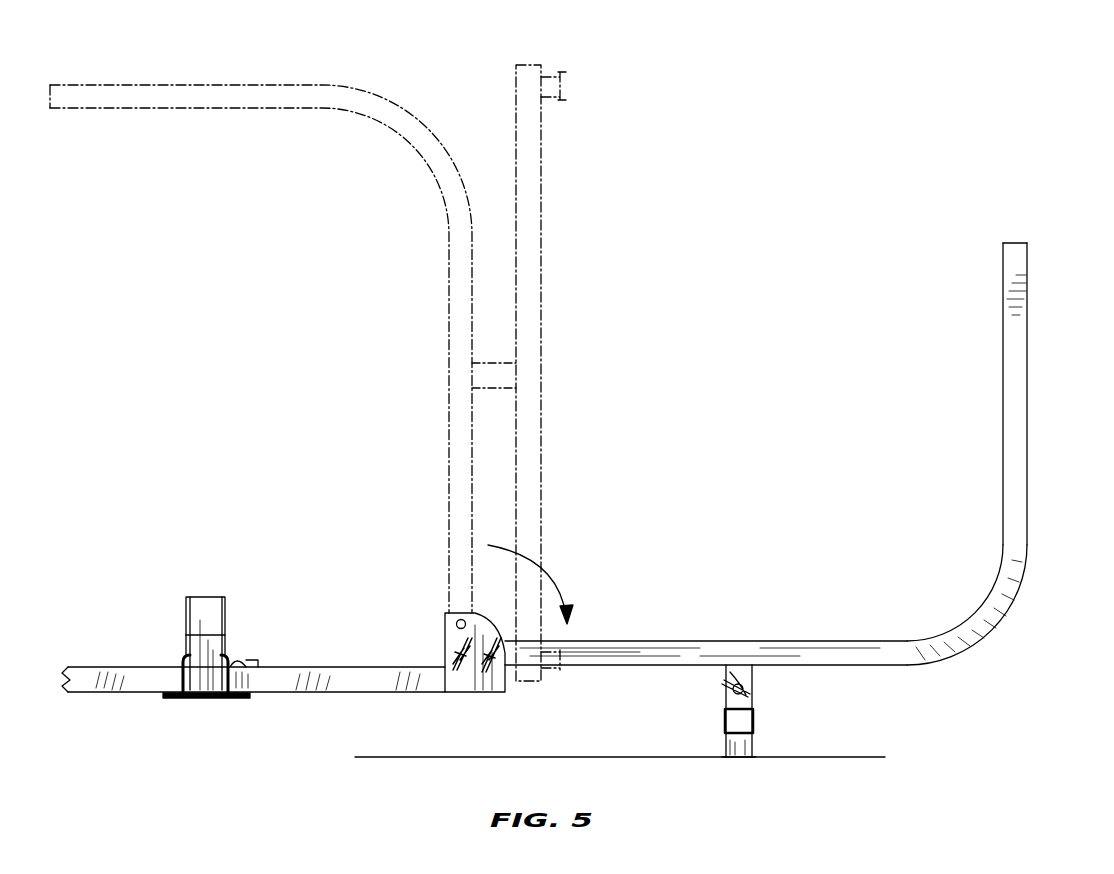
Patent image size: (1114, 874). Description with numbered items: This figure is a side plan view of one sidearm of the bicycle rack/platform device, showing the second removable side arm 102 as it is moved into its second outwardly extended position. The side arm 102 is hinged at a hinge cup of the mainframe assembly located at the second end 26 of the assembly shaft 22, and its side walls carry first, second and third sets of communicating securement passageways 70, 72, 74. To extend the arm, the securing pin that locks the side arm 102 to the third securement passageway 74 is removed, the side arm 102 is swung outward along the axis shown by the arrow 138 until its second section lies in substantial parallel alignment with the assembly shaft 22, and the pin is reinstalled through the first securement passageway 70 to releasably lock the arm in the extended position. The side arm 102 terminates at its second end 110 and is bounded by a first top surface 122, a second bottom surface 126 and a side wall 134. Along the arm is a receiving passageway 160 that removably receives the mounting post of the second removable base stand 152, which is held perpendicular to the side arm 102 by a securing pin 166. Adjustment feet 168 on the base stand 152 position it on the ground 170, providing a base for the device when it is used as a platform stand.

The assembly shaft 22 is at (325, 667).
The second end 26 is at (490, 694).
The first set of communicating securement passageways 70 is at (500, 650).
The second set of communicating securement passageways 72 is at (455, 645).
The third set of communicating securement passageways 74 is at (462, 619).
The second removable side arm 102 is at (250, 80).
The second end 110 is at (1013, 243).
The first top surface 122 is at (1003, 468).
The second bottom surface 126 is at (1035, 480).
The side wall 134 is at (832, 650).
The arrow 138 is at (548, 583).
The second removable base stand 152 is at (543, 228).
The receiving passageway 160 is at (493, 390).
The securing pin 166 is at (752, 690).
The adjustment feet 168 is at (738, 742).
The ground 170 is at (790, 762).